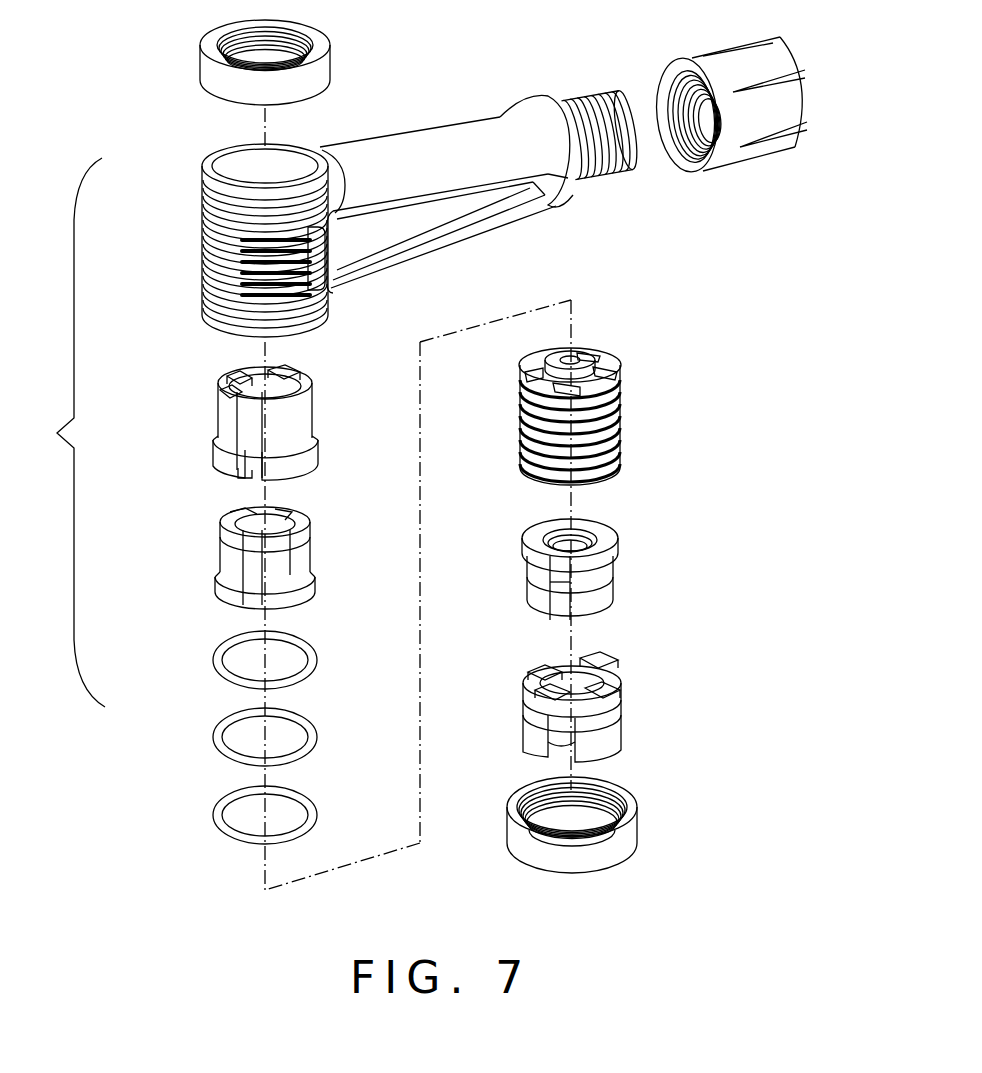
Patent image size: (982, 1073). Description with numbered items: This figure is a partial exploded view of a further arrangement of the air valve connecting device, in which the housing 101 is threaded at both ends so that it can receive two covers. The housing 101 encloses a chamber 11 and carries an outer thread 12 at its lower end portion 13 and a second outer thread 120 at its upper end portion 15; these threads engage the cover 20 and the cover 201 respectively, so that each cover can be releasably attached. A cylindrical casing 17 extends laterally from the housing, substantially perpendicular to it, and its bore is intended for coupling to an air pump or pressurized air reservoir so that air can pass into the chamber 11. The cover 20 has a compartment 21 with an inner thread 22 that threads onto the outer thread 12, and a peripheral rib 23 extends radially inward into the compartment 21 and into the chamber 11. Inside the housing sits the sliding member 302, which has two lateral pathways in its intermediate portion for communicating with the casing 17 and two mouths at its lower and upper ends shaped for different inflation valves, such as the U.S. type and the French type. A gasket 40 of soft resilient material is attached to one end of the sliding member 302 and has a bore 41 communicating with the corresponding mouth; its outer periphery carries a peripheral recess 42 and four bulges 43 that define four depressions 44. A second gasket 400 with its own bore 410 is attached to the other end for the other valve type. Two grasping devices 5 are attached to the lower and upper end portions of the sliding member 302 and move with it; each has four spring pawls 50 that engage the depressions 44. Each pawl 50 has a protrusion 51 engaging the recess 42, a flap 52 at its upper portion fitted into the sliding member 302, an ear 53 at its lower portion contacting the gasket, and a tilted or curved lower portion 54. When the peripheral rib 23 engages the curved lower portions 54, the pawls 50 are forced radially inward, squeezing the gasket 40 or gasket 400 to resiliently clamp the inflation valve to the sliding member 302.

The grasping device 5 is at (182, 401).
The chamber 11 is at (245, 216).
The outer thread 12 is at (215, 330).
The lower end portion 13 is at (215, 288).
The upper end portion 15 is at (303, 140).
The cylindrical casing 17 is at (445, 157).
The cover 20 is at (577, 819).
The compartment 21 is at (515, 792).
The inner thread 22 is at (597, 782).
The peripheral rib 23 is at (540, 826).
The gasket 40 is at (542, 577).
The bore 41 is at (576, 545).
The peripheral recess 42 is at (535, 584).
The bulges 43 is at (300, 528).
The depressions 44 is at (528, 608).
The pawls 50 is at (267, 426).
The protrusion 51 is at (552, 688).
The flap 52 is at (278, 372).
The ear 53 is at (247, 478).
The curved lower portion 54 is at (587, 748).
The housing 101 is at (212, 250).
The outer thread 120 is at (200, 181).
The cover 201 is at (205, 70).
The sliding member 302 is at (622, 425).
The gasket 400 is at (211, 566).
The bore 410 is at (232, 517).